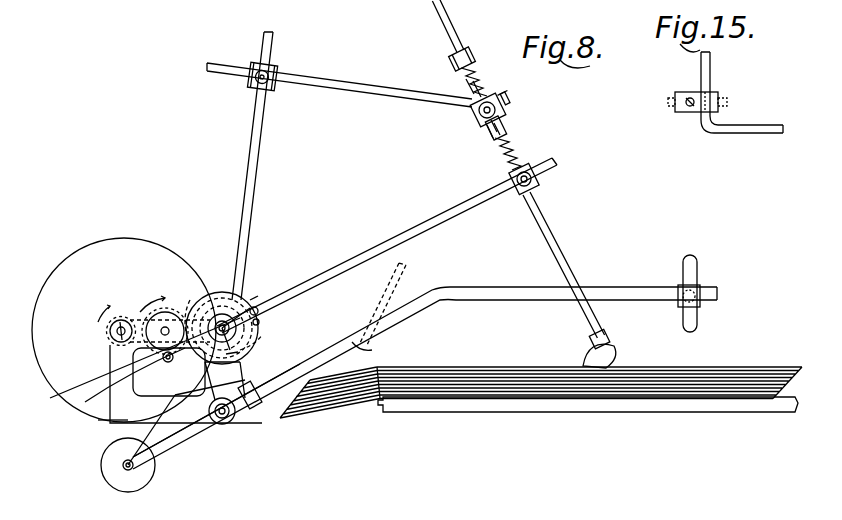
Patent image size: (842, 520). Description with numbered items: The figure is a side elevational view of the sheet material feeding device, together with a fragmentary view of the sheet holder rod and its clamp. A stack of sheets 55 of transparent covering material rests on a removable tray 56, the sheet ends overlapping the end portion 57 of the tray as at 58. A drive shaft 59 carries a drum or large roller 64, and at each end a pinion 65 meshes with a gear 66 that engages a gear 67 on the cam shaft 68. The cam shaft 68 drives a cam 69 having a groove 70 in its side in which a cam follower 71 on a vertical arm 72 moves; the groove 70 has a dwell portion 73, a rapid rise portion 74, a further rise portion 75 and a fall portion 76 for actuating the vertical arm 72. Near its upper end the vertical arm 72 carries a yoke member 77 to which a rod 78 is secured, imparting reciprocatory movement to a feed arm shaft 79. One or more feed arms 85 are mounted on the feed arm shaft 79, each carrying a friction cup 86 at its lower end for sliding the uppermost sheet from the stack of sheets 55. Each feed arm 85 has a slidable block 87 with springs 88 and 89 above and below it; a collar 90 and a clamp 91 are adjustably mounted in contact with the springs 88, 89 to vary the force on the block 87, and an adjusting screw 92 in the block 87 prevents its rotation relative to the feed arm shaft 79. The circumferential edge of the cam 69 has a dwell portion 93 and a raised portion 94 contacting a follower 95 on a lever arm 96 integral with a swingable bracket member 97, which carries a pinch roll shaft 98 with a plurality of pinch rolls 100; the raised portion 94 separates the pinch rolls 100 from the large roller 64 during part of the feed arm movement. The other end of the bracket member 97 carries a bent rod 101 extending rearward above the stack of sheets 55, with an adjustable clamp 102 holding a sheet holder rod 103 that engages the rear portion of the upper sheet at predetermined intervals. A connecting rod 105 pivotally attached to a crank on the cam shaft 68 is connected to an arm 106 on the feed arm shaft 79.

In FIG. 8, the stack of sheets 55 is at (700, 387).
In FIG. 8, the removable tray 56 is at (606, 399).
In FIG. 8, the end portion of the tray 57 is at (392, 400).
In FIG. 8, the overlapping sheet ends 58 is at (343, 398).
In FIG. 8, the drive shaft 59 is at (121, 318).
In FIG. 8, the drum or large roller 64 is at (58, 262).
In FIG. 8, the pinion 65 is at (124, 318).
In FIG. 8, the gear 66 is at (163, 310).
In FIG. 8, the gear 67 is at (218, 291).
In FIG. 8, the cam shaft 68 is at (256, 310).
In FIG. 8, the cam 69 is at (258, 322).
In FIG. 8, the cam groove 70 is at (212, 295).
In FIG. 8, the cam follower 71 is at (275, 309).
In FIG. 8, the vertical arm 72 is at (252, 192).
In FIG. 8, the dwell portion 73 is at (250, 300).
In FIG. 8, the rapid rise portion 74 is at (60, 394).
In FIG. 8, the further rise portion 75 is at (90, 402).
In FIG. 8, the fall portion 76 is at (302, 362).
In FIG. 8, the yoke member 77 is at (271, 90).
In FIG. 8, the rod 78 is at (372, 98).
In FIG. 8, the feed arm shaft 79 is at (472, 115).
In FIG. 8, the feed arm 85 is at (555, 247).
In FIG. 8, the friction cup 86 is at (612, 351).
In FIG. 8, the slidable block 87 is at (506, 128).
In FIG. 8, the spring 88 is at (478, 78).
In FIG. 8, the spring 89 is at (514, 145).
In FIG. 8, the collar 90 is at (465, 52).
In FIG. 8, the clamp 91 is at (528, 165).
In FIG. 8, the adjusting screw 92 is at (509, 97).
In FIG. 8, the dwell portion 93 is at (258, 344).
In FIG. 8, the raised portion 94 is at (248, 380).
In FIG. 8, the follower 95 is at (165, 362).
In FIG. 8, the lever arm 96 is at (190, 362).
In FIG. 8, the swingable bracket member 97 is at (195, 432).
In FIG. 8, the pinch roll shaft 98 is at (127, 470).
In FIG. 8, the pinch rolls 100 is at (142, 480).
In FIG. 8, the bent rod 101 is at (490, 283).
In FIG. 15, the bent rod 101 is at (688, 98).
In FIG. 8, the adjustable clamp 102 is at (700, 306).
In FIG. 15, the adjustable clamp 102 is at (697, 112).
In FIG. 8, the sheet holder rod 103 is at (698, 268).
In FIG. 15, the sheet holder rod 103 is at (757, 132).
In FIG. 8, the connecting rod 105 is at (347, 267).
In FIG. 8, the arm 106 is at (490, 126).